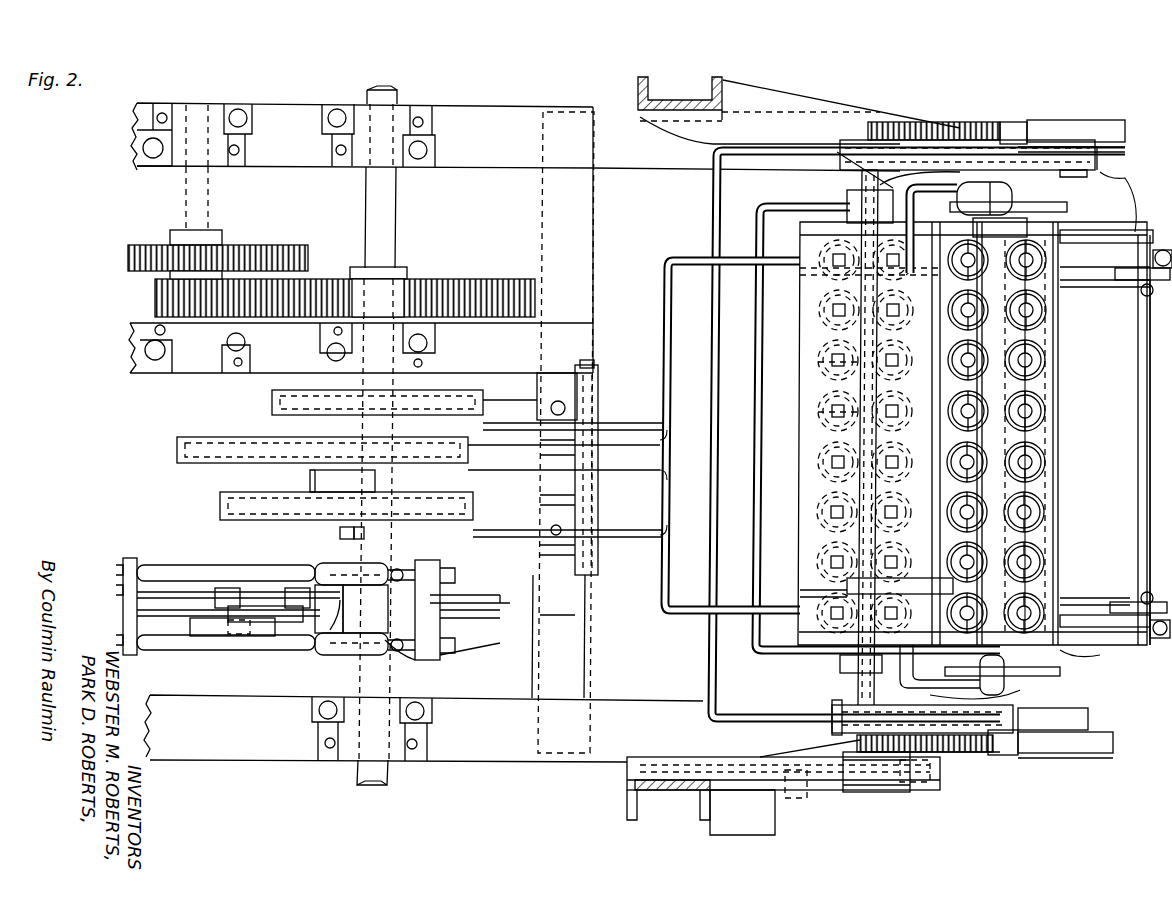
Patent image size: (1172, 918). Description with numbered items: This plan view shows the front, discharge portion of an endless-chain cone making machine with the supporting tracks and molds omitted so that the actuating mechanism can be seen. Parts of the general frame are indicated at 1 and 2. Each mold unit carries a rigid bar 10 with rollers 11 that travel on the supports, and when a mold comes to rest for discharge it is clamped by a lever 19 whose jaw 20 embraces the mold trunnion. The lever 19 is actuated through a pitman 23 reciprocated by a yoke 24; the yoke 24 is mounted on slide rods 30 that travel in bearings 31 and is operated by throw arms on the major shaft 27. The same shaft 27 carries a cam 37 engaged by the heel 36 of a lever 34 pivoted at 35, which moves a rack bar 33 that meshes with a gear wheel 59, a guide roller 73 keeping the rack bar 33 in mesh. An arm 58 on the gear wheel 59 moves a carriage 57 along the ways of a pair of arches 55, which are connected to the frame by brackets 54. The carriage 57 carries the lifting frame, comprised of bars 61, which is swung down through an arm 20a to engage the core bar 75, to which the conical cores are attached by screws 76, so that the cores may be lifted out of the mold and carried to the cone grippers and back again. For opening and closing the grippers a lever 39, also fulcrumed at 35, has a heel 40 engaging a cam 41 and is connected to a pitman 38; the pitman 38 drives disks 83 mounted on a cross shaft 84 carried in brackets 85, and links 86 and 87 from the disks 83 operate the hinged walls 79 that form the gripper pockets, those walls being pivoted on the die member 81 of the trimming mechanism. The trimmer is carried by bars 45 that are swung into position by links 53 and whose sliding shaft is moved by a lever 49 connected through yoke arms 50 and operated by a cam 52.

The general frame 1 is at (482, 105).
The general frame 2 is at (638, 82).
The bar 10 is at (850, 768).
The rollers 11 is at (795, 798).
The lever 19 is at (1067, 208).
The jaw 20 is at (1014, 184).
The arm 20a is at (860, 210).
The pitman 23 is at (483, 597).
The yoke 24 is at (330, 630).
The major shaft 27 is at (368, 92).
The slide rods 30 is at (200, 562).
The bearings 31 is at (315, 565).
The rack bar 33 is at (1012, 122).
The lever 34 is at (713, 194).
The pivot 35 is at (598, 455).
The heel 36 is at (340, 532).
The cam 37 is at (292, 512).
The pitman 38 is at (1162, 250).
The lever 39 is at (680, 604).
The heel 40 is at (315, 478).
The cam 41 is at (205, 437).
The bars 45 is at (1010, 386).
The lever 49 is at (515, 423).
The yoke arms 50 is at (780, 208).
The cam 52 is at (272, 395).
The links 53 is at (880, 180).
The brackets 54 is at (792, 98).
The arches 55 is at (975, 140).
The carriage 57 is at (860, 383).
The arm 58 is at (862, 140).
The gear wheel 59 is at (958, 122).
The lifting frame bars 61 is at (830, 290).
The guide roller 73 is at (1105, 120).
The core bar 75 is at (810, 480).
The screws 76 is at (835, 458).
The walls 79 is at (1040, 466).
The die member 81 is at (1040, 438).
The disks 83 is at (1115, 280).
The cross shaft 84 is at (1148, 330).
The brackets 85 is at (1108, 683).
The link 86 is at (1085, 280).
The link 87 is at (1100, 288).